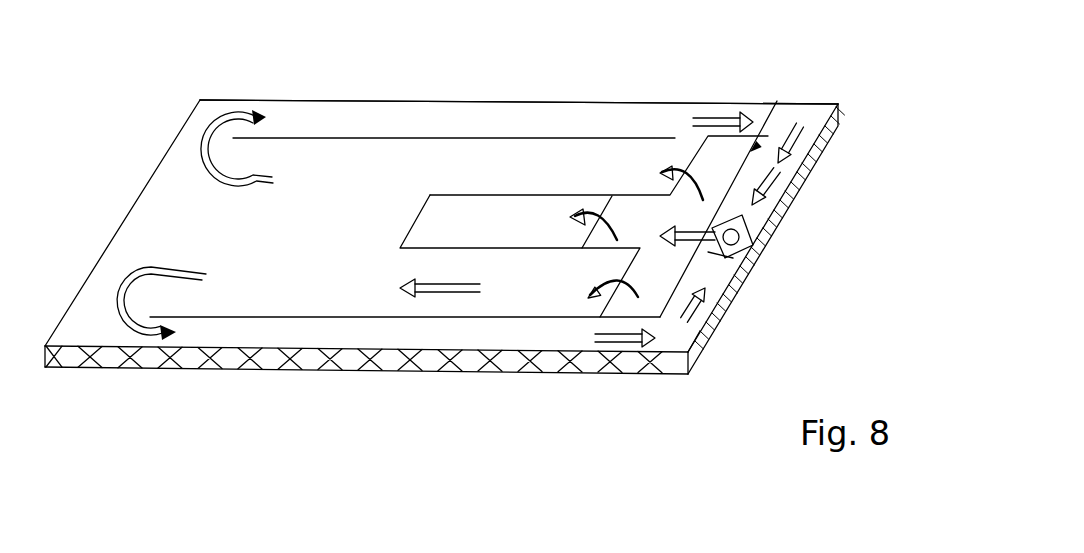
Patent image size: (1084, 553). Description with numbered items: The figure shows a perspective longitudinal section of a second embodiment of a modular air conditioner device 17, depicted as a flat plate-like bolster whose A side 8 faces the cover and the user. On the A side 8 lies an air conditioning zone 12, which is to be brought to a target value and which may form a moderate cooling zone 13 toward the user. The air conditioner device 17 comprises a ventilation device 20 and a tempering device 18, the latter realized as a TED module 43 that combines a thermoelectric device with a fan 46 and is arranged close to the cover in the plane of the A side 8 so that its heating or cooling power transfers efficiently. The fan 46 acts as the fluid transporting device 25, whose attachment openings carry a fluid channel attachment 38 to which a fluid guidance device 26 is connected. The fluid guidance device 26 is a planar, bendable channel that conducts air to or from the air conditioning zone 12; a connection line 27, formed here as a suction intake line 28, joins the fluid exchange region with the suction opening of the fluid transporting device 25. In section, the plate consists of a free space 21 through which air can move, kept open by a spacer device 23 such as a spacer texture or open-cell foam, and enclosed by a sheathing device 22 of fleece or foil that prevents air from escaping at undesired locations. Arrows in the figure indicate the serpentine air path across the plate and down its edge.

The A side 8 is at (205, 113).
The ventilation device 20 is at (312, 100).
The air conditioner device 17 is at (592, 96).
The moderate cooling zone 13 is at (454, 82).
The fluid guidance device 26 is at (515, 128).
The air conditioning zone 12 is at (510, 172).
The TED module 43 is at (766, 228).
The tempering device 18 is at (742, 216).
The fluid transporting device 25 is at (779, 228).
The fan 46 is at (752, 255).
The fluid channel attachment 38 is at (745, 282).
The suction intake line 28 is at (761, 352).
The connection line 27 is at (712, 341).
The sheathing device 22 is at (390, 372).
The free space 21 is at (308, 364).
The spacer device 23 is at (190, 368).